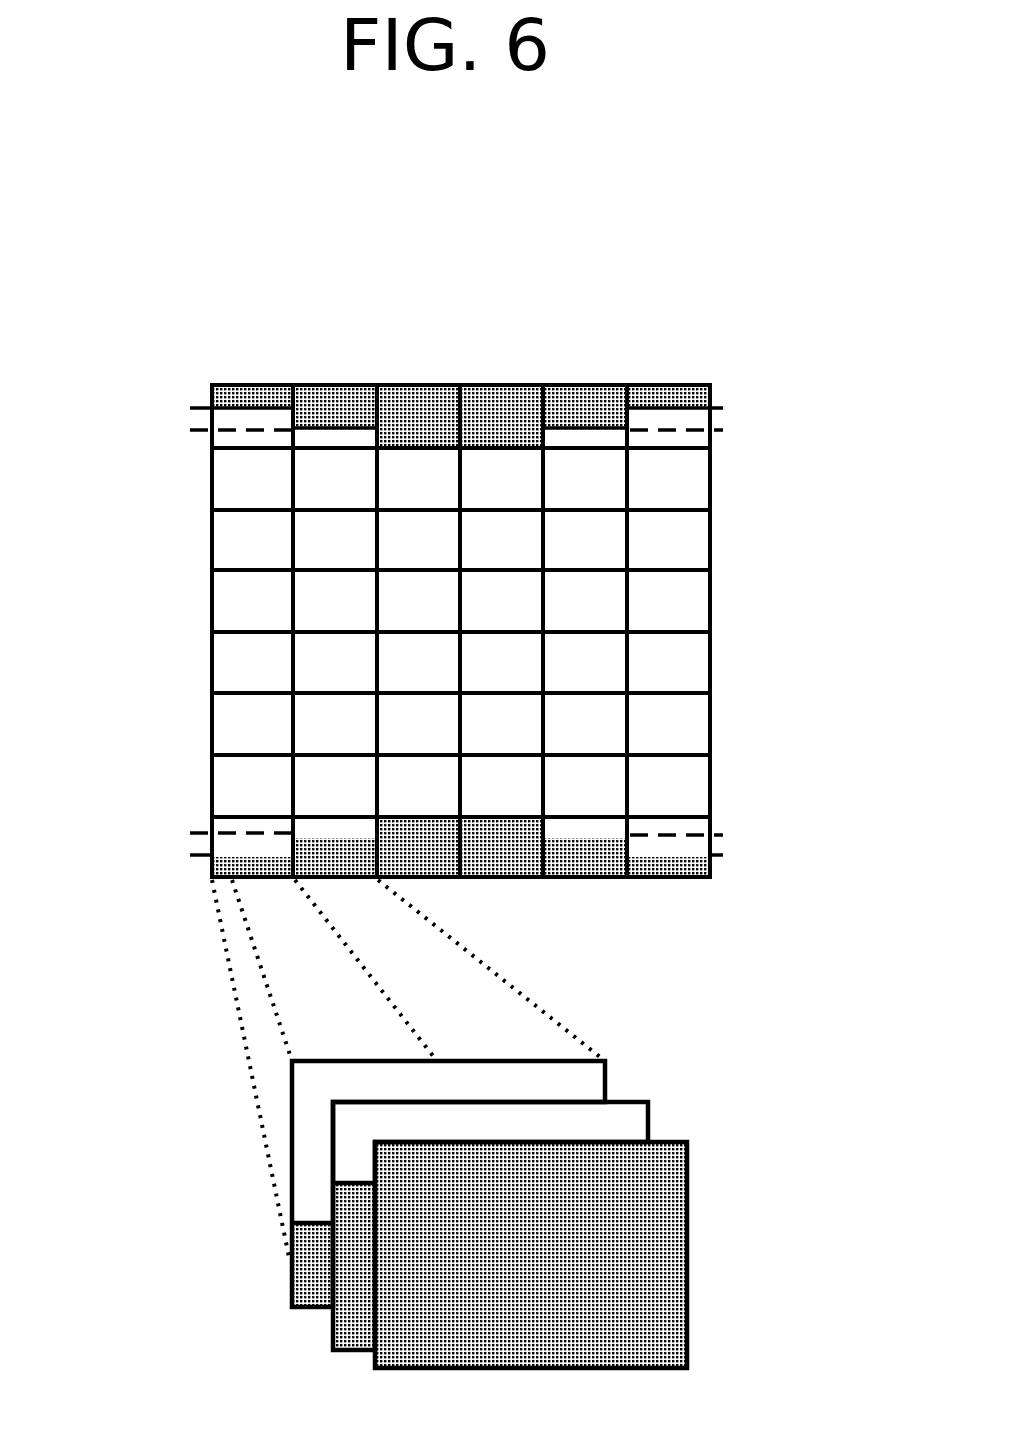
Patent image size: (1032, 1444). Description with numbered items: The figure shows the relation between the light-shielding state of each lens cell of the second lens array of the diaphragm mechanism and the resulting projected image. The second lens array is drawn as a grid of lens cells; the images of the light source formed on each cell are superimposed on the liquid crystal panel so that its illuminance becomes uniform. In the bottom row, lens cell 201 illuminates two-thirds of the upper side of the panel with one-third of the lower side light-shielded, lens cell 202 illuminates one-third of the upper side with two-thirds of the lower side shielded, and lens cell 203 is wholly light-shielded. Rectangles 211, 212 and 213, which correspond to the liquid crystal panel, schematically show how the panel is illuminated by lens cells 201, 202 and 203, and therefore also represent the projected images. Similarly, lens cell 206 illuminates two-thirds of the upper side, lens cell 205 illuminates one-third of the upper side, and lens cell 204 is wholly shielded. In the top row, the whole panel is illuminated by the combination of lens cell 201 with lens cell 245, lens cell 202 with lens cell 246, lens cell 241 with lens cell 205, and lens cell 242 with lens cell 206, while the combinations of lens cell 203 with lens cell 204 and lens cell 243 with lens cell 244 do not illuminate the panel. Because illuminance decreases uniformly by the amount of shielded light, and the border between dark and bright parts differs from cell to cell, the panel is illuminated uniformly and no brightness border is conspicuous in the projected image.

The lens cell 201 is at (237, 828).
The lens cell 202 is at (347, 825).
The lens cell 203 is at (440, 813).
The lens cell 204 is at (520, 825).
The lens cell 205 is at (600, 828).
The lens cell 206 is at (680, 848).
The rectangle 211 is at (590, 1085).
The rectangle 212 is at (623, 1130).
The rectangle 213 is at (660, 1267).
The lens cell 241 is at (237, 438).
The lens cell 242 is at (340, 440).
The lens cell 243 is at (422, 400).
The lens cell 244 is at (503, 398).
The lens cell 245 is at (602, 395).
The lens cell 246 is at (676, 396).